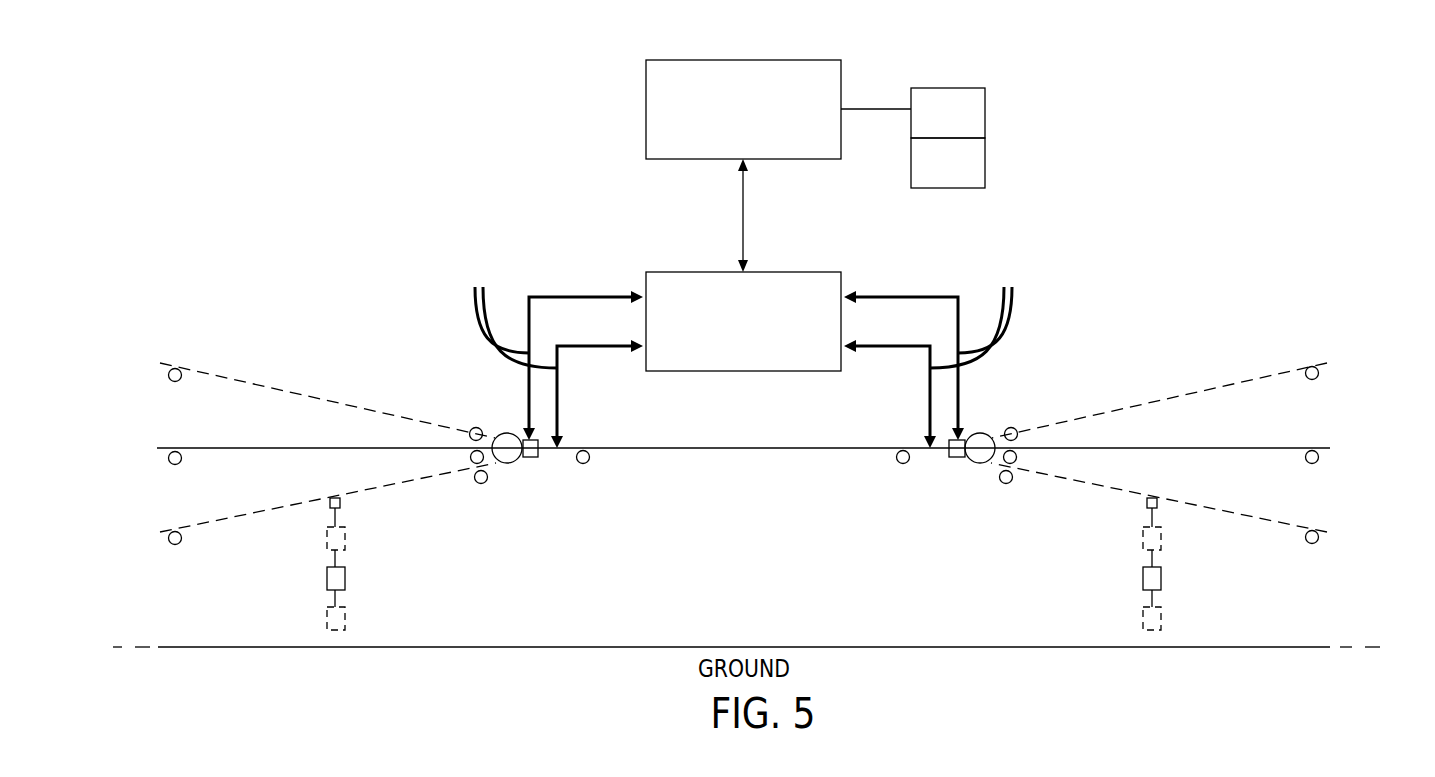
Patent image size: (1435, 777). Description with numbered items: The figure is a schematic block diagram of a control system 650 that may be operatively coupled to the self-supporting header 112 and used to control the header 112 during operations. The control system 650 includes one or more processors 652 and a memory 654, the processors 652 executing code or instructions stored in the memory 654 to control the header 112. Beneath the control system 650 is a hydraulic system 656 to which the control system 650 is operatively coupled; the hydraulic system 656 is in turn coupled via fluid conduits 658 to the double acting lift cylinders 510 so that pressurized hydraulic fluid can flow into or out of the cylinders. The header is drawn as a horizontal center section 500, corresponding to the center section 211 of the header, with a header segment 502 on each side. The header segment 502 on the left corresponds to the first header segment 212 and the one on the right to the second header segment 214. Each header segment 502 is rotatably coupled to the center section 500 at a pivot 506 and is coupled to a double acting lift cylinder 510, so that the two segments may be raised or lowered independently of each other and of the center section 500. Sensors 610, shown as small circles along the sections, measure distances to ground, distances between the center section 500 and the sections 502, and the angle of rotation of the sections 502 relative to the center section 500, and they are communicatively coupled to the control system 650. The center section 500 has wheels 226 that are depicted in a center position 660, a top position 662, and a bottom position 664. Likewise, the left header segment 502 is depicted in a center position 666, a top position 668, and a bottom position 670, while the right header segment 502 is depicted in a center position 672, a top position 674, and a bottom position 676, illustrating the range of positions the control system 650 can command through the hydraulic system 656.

The header 112 is at (352, 162).
The center section 211 is at (743, 422).
The center section 500 is at (820, 446).
The first header segment 212 is at (293, 340).
The second header segment 214 is at (1196, 340).
The header segment 502 is at (743, 389).
The wheels 226 is at (345, 578).
The pivot 506 is at (518, 432).
The double acting lift cylinder 510 is at (531, 457).
The sensors 610 is at (469, 434).
The control system 650 is at (790, 60).
The processor 652 is at (985, 112).
The memory 654 is at (985, 160).
The hydraulic system 656 is at (790, 272).
The fluid conduits 658 is at (743, 352).
The center position 660 is at (744, 575).
The top position 662 is at (327, 540).
The bottom position 664 is at (345, 618).
The center position 666 is at (130, 448).
The top position 668 is at (130, 358).
The bottom position 670 is at (130, 539).
The center position 672 is at (1357, 448).
The top position 674 is at (1357, 358).
The bottom position 676 is at (1357, 537).